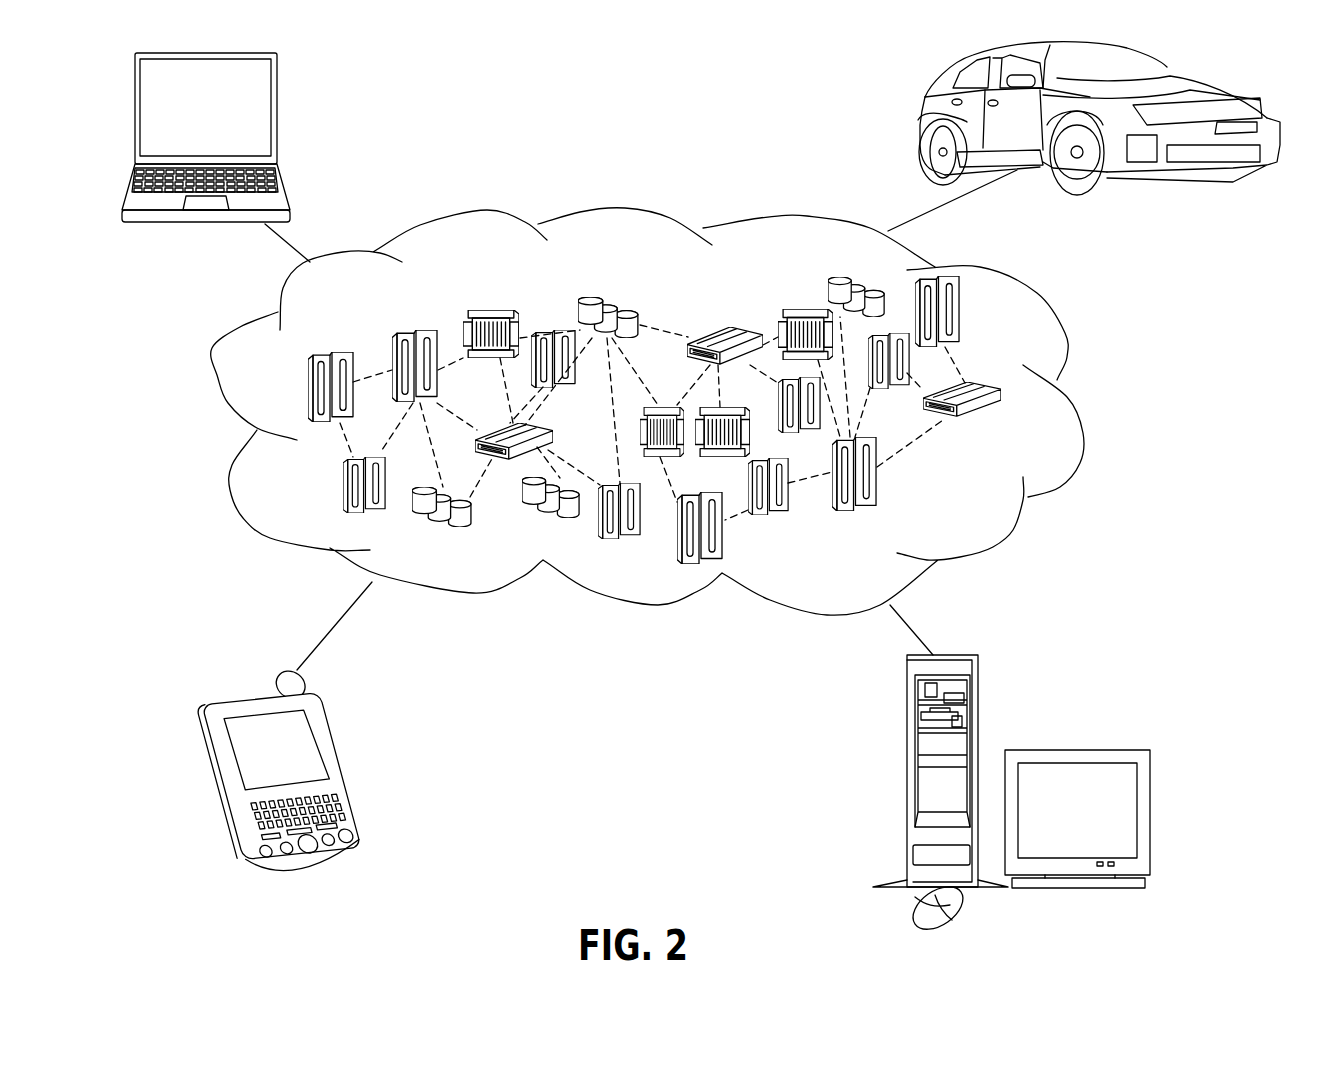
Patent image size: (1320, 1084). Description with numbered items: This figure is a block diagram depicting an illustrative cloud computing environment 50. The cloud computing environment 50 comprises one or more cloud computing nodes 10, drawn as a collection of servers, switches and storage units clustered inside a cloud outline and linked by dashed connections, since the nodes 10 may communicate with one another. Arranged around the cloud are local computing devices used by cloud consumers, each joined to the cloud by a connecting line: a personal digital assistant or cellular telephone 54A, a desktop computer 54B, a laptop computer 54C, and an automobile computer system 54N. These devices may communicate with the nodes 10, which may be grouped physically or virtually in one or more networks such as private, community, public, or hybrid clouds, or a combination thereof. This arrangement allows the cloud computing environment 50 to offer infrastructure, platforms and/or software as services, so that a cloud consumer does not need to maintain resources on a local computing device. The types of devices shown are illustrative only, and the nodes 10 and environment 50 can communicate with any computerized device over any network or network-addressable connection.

The cloud computing nodes 10 is at (983, 503).
The cloud computing environment 50 is at (1070, 400).
The personal digital assistant or cellular telephone 54A is at (333, 732).
The desktop computer 54B is at (905, 717).
The laptop computer 54C is at (277, 92).
The automobile computer system 54N is at (917, 103).